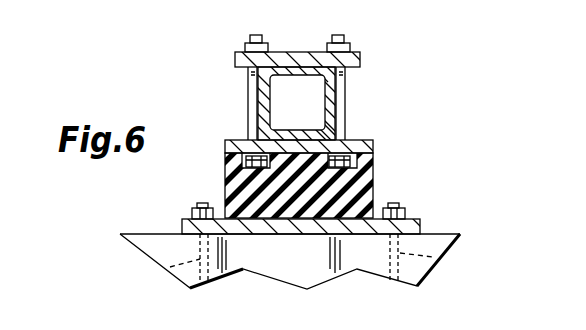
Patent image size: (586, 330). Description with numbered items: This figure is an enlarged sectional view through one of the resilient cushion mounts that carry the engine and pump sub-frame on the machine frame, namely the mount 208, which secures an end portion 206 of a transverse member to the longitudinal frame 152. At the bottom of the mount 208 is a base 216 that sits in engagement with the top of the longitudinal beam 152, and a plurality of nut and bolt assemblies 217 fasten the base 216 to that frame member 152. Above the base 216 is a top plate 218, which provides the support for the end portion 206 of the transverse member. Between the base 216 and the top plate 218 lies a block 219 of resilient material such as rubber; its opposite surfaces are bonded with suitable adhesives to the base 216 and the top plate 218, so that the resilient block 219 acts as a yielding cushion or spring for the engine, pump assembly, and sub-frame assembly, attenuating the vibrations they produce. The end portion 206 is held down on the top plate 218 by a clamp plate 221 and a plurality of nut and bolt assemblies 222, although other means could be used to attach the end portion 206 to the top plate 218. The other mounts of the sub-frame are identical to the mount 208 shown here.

The longitudinal frame 152 is at (151, 233).
The end portion of transverse member 206 is at (327, 97).
The mount 208 is at (367, 57).
The base 216 is at (417, 222).
The nut and bolt assemblies 217 is at (170, 267).
The top plate 218 is at (373, 143).
The block of resilient material 219 is at (373, 167).
The clamp plate 221 is at (293, 53).
The nut and bolt assemblies 222 is at (246, 44).